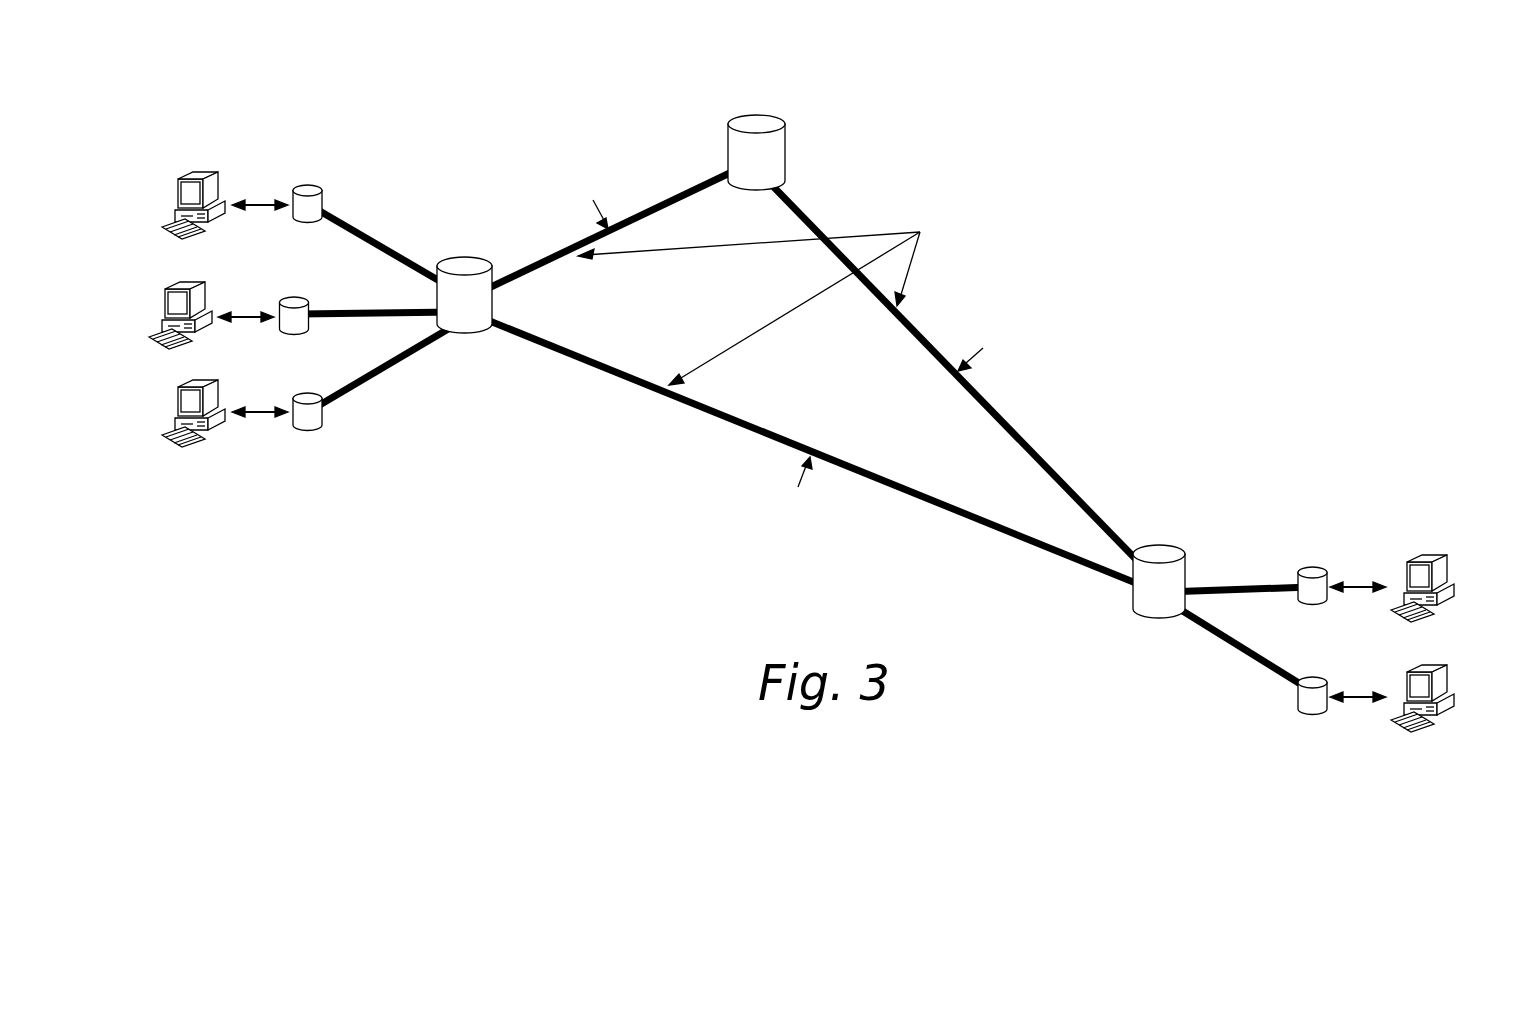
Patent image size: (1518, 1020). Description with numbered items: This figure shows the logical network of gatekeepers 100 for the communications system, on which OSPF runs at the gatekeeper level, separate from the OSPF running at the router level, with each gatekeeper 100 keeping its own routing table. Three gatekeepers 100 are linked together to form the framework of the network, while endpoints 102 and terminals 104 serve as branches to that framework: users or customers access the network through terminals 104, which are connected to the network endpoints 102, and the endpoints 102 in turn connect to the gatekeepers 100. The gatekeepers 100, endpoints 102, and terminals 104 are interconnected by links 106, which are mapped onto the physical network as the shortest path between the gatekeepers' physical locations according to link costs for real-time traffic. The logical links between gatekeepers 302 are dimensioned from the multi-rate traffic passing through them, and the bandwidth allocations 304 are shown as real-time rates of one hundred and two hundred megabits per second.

The gatekeeper 100 is at (464, 334).
The endpoint 102 is at (307, 185).
The terminal 104 is at (220, 171).
The link 106 is at (588, 235).
The logical links between gatekeepers 302 is at (1024, 211).
The link bandwidth designation 304 is at (522, 180).